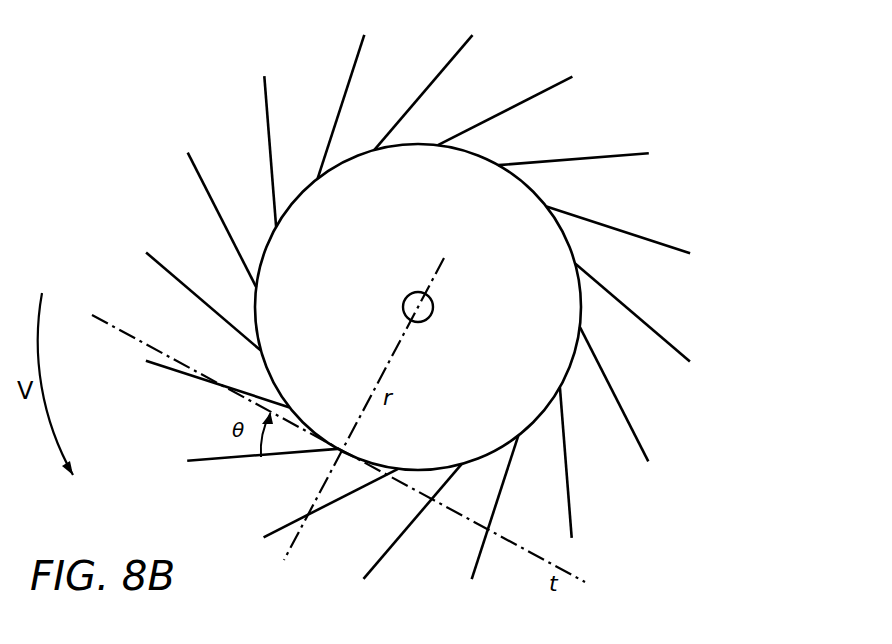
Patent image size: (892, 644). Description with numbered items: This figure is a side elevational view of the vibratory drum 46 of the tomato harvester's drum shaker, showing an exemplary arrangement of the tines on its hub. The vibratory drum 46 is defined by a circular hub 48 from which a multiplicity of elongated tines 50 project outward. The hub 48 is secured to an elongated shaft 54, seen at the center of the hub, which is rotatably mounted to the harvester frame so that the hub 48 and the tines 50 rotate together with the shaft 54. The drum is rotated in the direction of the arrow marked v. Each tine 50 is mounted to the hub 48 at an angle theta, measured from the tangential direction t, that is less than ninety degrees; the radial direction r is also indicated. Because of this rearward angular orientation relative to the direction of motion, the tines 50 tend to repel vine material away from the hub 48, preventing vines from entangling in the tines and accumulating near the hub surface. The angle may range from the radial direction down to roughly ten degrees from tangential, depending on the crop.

The vibratory drum 46 is at (460, 307).
The hub 48 is at (506, 389).
The tines 50 is at (457, 307).
The shaft 54 is at (461, 294).